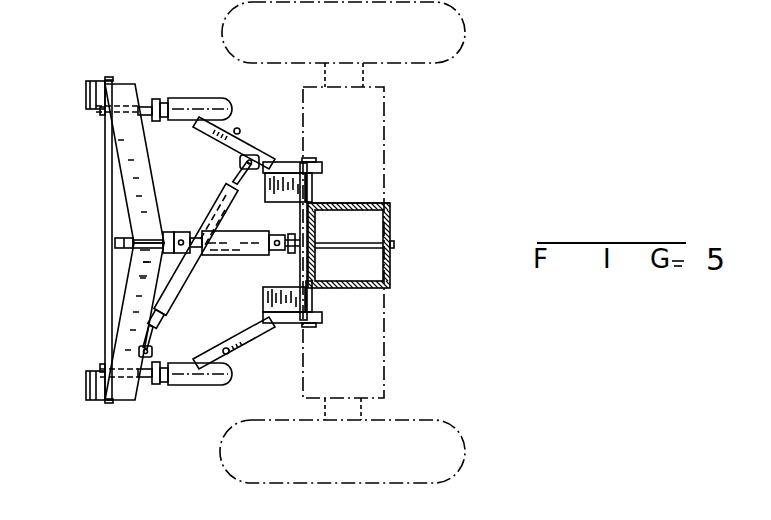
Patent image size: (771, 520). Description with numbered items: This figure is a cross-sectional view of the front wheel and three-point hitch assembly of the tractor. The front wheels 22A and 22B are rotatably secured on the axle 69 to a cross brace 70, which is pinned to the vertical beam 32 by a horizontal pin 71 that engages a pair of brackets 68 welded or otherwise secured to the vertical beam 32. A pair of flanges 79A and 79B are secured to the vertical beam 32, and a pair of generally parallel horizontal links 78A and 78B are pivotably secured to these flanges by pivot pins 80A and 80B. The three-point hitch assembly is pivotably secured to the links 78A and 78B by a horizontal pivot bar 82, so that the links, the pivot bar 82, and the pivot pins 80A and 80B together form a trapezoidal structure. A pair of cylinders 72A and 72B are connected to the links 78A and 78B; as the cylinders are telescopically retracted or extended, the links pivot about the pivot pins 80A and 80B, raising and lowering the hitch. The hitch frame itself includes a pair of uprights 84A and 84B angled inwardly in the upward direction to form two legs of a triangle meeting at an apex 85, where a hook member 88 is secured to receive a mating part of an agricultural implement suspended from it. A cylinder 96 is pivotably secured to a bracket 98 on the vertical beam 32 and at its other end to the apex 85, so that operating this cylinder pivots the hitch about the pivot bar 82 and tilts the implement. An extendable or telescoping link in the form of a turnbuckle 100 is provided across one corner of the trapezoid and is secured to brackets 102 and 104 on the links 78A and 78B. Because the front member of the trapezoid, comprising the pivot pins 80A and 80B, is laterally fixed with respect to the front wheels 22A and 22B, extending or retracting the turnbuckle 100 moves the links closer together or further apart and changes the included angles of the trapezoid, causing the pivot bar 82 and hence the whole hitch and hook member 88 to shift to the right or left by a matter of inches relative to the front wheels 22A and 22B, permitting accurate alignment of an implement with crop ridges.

The front wheel 22B is at (465, 30).
The front wheel 22A is at (465, 449).
The axle 69 is at (363, 67).
The cross brace 70 is at (384, 113).
The pivot bar 82 is at (104, 197).
The upright 84B is at (124, 153).
The upright 84A is at (128, 326).
The apex 85 is at (149, 240).
The hook member 88 is at (117, 245).
The cylinder 96 is at (239, 233).
The bracket 98 is at (293, 256).
The flange 79B is at (296, 182).
The flange 79A is at (296, 303).
The pivot pin 80B is at (310, 158).
The pivot pin 80A is at (308, 323).
The link 78B is at (238, 129).
The link 78A is at (227, 354).
The cylinder 72B is at (209, 99).
The cylinder 72A is at (195, 384).
The bracket 104 is at (251, 151).
The turnbuckle 100 is at (204, 265).
The bracket 102 is at (148, 353).
The bracket 68 is at (391, 224).
The vertical beam 32 is at (350, 207).
The horizontal pin 71 is at (396, 244).